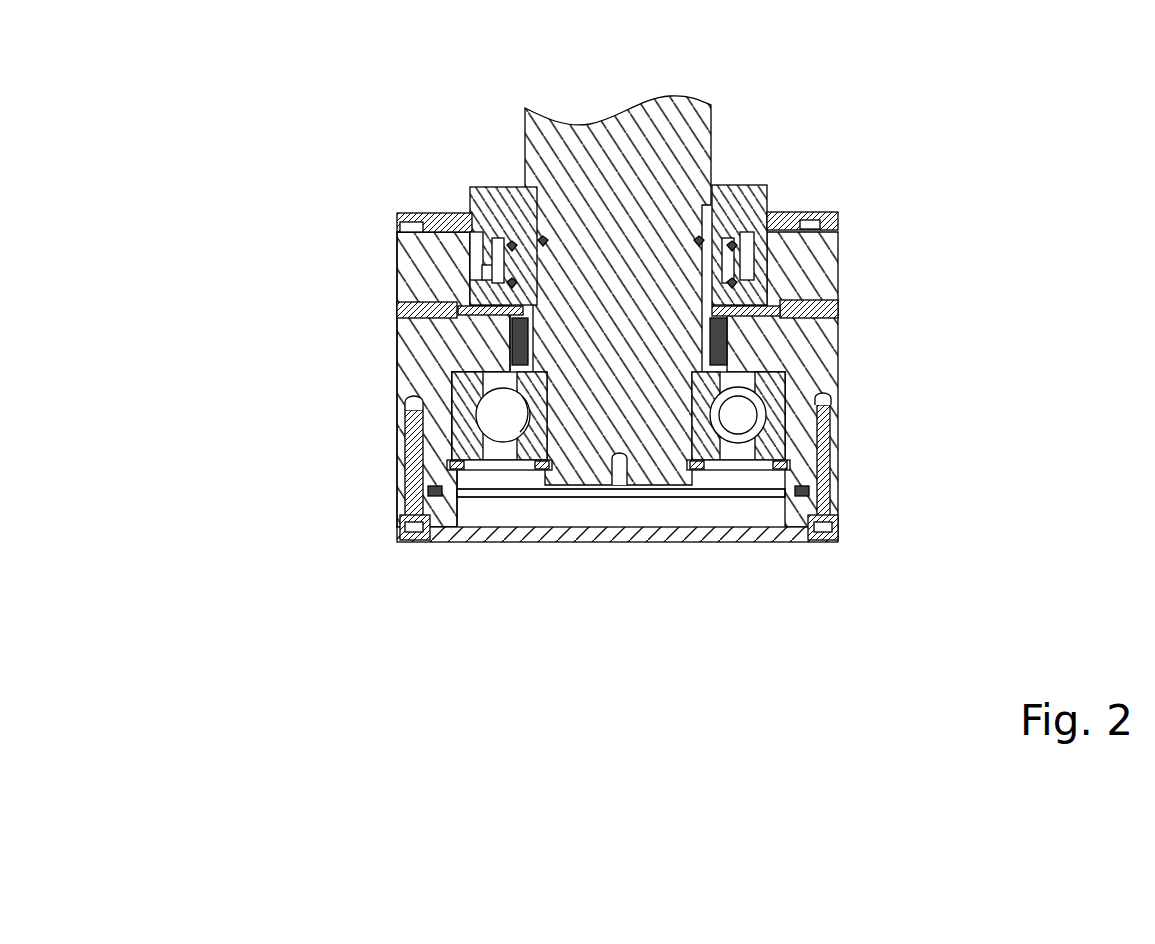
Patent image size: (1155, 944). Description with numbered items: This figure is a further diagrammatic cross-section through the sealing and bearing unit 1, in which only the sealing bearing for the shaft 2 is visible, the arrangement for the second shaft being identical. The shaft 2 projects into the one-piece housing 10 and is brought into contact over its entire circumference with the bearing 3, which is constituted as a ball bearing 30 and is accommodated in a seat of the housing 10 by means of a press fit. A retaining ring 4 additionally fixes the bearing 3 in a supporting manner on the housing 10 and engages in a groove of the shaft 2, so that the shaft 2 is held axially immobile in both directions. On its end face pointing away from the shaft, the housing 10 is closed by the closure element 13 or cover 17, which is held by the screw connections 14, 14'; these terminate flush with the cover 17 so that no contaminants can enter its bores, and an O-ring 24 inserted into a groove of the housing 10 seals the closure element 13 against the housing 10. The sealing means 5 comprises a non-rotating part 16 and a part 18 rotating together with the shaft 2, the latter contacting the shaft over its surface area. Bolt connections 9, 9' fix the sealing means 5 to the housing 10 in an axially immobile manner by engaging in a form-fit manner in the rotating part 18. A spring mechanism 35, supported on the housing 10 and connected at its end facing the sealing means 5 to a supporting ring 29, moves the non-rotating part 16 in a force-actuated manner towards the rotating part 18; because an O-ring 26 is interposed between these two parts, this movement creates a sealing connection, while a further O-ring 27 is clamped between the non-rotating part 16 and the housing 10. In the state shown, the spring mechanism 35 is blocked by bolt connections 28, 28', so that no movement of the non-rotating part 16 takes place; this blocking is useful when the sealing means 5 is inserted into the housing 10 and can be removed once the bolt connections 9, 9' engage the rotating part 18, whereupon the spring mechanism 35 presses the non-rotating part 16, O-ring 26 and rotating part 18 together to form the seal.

The sealing and bearing unit 1 is at (343, 714).
The shaft 2 is at (647, 114).
The bearing 3 is at (397, 407).
The ball bearing 30 is at (397, 407).
The retaining ring 4 is at (510, 463).
The sealing means 5 is at (740, 160).
The bolt connection 9 is at (392, 146).
The bolt connection 9' is at (802, 181).
The housing 10 is at (840, 428).
The closure element 13 is at (621, 497).
The cover 17 is at (621, 497).
The screw connection 14 is at (301, 468).
The screw connection 14' is at (929, 466).
The non-rotating part 16 is at (476, 282).
The part rotating together with the shaft 18 is at (458, 222).
The O-ring 24 is at (433, 493).
The O-ring 26 is at (517, 228).
The further O-ring 27 is at (838, 216).
The bolt connection 28 is at (387, 259).
The bolt connection 28' is at (890, 233).
The supporting ring 29 is at (531, 111).
The spring mechanism 35 is at (795, 322).